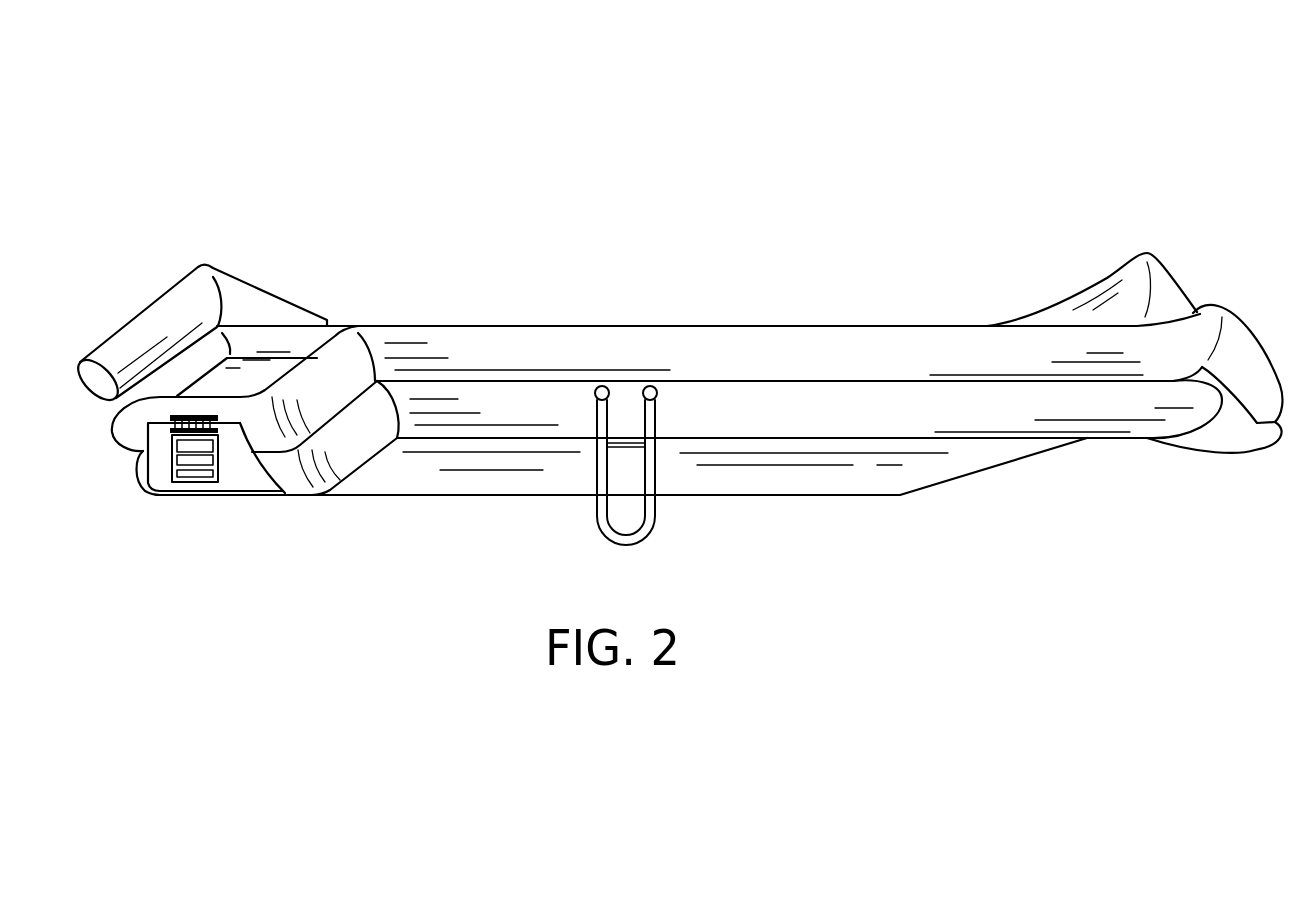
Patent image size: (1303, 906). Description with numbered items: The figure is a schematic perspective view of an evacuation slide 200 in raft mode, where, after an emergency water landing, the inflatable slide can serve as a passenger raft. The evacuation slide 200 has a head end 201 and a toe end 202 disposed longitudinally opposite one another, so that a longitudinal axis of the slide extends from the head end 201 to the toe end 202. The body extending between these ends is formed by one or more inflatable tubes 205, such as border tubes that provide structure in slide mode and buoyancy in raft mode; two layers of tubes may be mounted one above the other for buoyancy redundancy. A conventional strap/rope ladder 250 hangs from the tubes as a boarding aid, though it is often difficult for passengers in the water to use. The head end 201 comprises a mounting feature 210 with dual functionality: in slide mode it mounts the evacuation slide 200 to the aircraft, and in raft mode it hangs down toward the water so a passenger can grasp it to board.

The evacuation slide 200 is at (118, 98).
The head end 201 is at (290, 482).
The toe end 202 is at (1250, 440).
The inflatable tubes 205 is at (423, 482).
The mounting feature 210 is at (160, 448).
The strap/rope ladder 250 is at (596, 529).